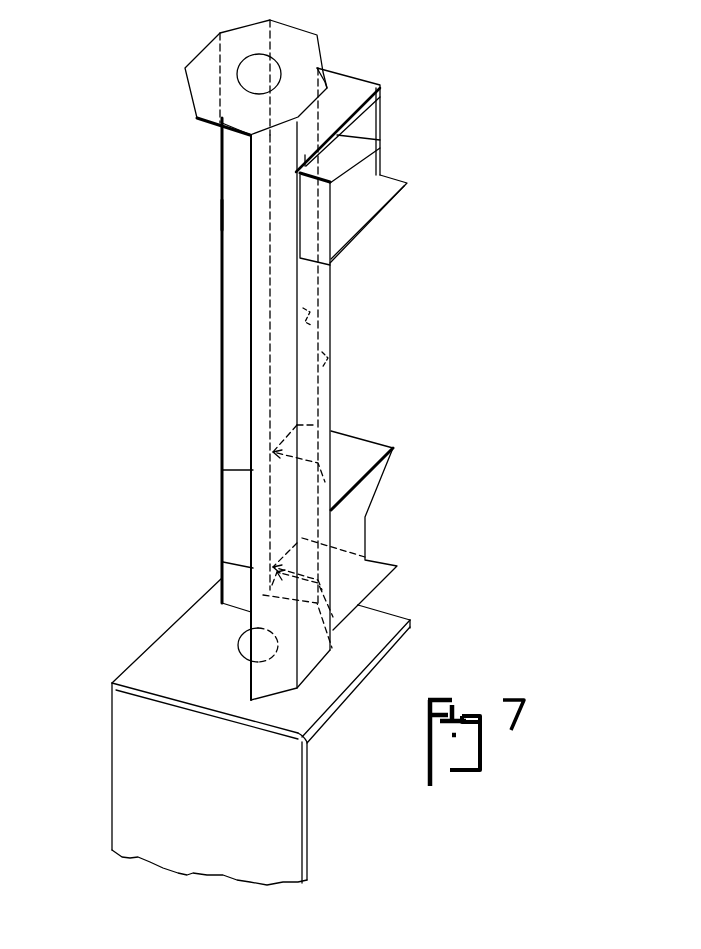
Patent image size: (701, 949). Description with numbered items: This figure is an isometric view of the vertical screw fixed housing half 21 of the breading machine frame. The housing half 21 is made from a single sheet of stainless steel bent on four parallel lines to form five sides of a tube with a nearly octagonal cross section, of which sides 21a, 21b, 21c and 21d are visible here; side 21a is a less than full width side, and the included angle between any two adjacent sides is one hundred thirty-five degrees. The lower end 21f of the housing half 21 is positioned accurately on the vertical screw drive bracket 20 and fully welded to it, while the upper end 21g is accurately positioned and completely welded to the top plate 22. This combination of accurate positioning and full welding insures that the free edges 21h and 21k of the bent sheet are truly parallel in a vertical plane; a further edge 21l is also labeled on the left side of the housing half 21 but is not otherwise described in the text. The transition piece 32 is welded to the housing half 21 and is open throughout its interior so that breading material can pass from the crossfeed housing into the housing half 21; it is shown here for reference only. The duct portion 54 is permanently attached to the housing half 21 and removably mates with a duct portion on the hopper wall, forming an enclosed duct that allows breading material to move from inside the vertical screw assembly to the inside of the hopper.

The vertical screw drive bracket 20 is at (112, 783).
The vertical screw fixed housing half 21 is at (333, 290).
The side 21a is at (258, 466).
The side 21b is at (311, 498).
The side 21c is at (333, 363).
The side 21d is at (333, 320).
The lower end 21f is at (253, 597).
The upper end 21g is at (236, 140).
The edge 21h is at (225, 542).
The edge 21k is at (223, 562).
The post side flange 21l is at (228, 203).
The top plate 22 is at (203, 71).
The transition piece 32 is at (395, 449).
The duct portion 54 is at (380, 122).